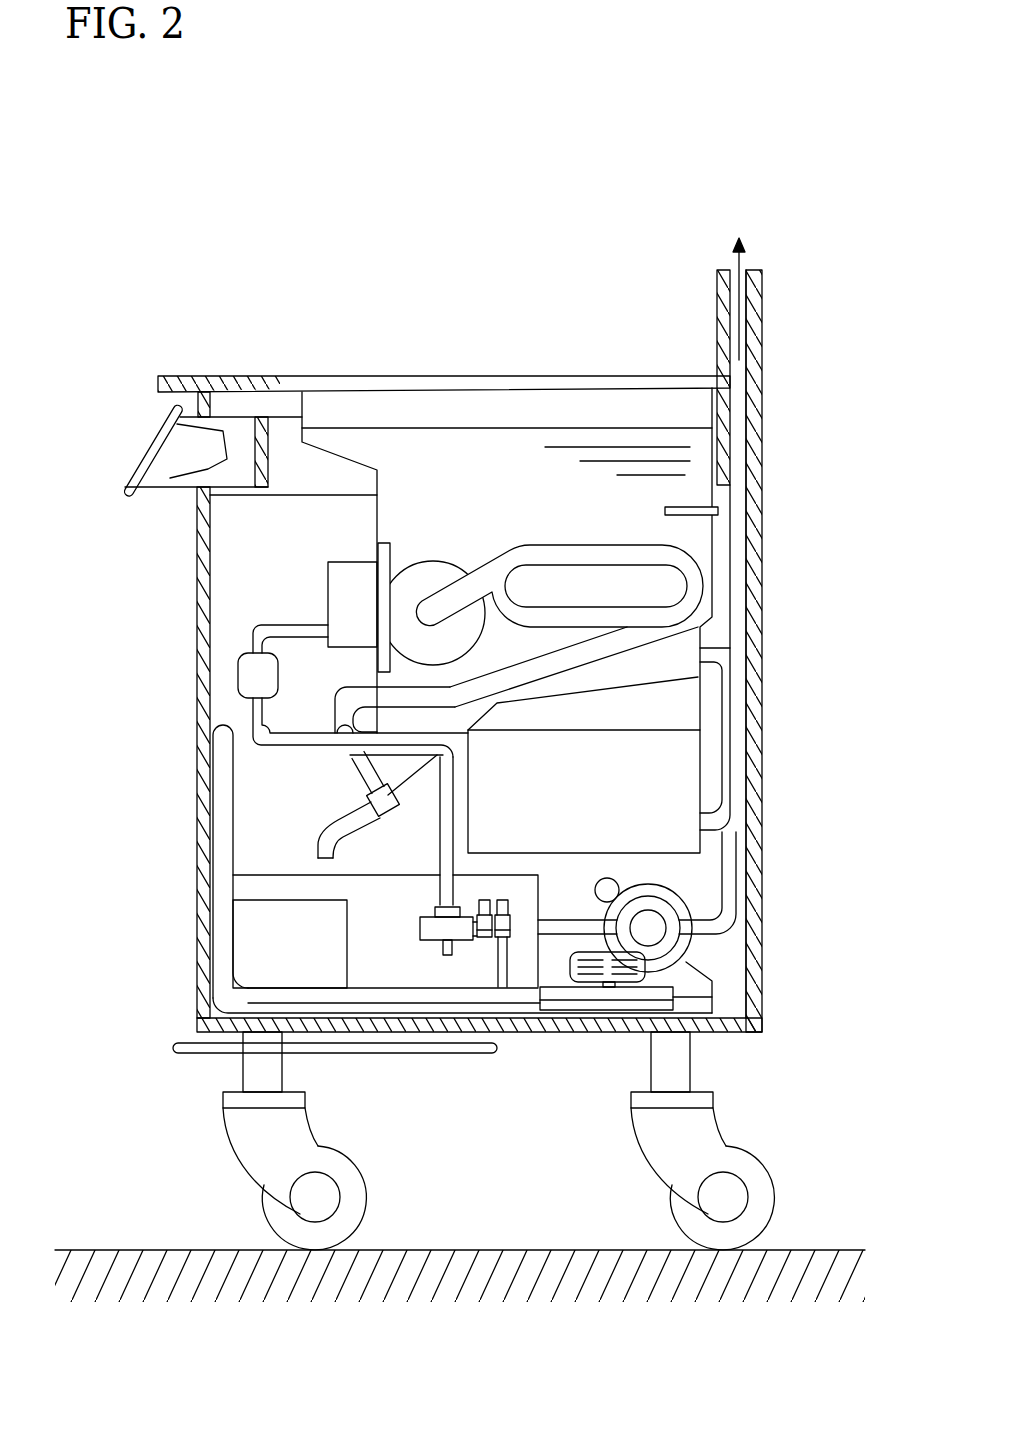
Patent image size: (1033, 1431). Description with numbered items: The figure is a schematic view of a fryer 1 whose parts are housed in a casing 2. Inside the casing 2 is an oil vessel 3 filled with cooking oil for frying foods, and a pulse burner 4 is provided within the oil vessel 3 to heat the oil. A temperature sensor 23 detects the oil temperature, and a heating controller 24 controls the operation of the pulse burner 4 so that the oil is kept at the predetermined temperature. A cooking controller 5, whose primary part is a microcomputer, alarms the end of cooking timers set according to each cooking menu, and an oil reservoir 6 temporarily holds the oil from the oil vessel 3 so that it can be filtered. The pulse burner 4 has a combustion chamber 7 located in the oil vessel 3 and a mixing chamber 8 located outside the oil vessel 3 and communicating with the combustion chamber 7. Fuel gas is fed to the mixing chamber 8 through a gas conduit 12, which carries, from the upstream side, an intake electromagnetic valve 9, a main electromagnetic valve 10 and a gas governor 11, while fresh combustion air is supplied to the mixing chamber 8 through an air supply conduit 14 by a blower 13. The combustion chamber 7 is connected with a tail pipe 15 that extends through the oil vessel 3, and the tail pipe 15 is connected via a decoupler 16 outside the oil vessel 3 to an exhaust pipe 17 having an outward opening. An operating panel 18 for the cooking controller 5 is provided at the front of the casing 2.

The fryer 1 is at (433, 283).
The casing 2 is at (762, 830).
The oil vessel 3 is at (343, 457).
The pulse burner 4 is at (420, 500).
The cooking controller 5 is at (173, 480).
The oil reservoir 6 is at (378, 957).
The combustion chamber 7 is at (433, 577).
The mixing chamber 8 is at (326, 607).
The intake electromagnetic valve 9 is at (508, 937).
The main electromagnetic valve 10 is at (480, 938).
The gas governor 11 is at (425, 938).
The gas conduit 12 is at (205, 1053).
The blower 13 is at (600, 1000).
The air supply conduit 14 is at (213, 983).
The tail pipe 15 is at (608, 552).
The decoupler 16 is at (667, 762).
The exhaust pipe 17 is at (738, 613).
The operating panel 18 is at (145, 455).
The temperature sensor 23 is at (693, 507).
The heating controller 24 is at (255, 918).